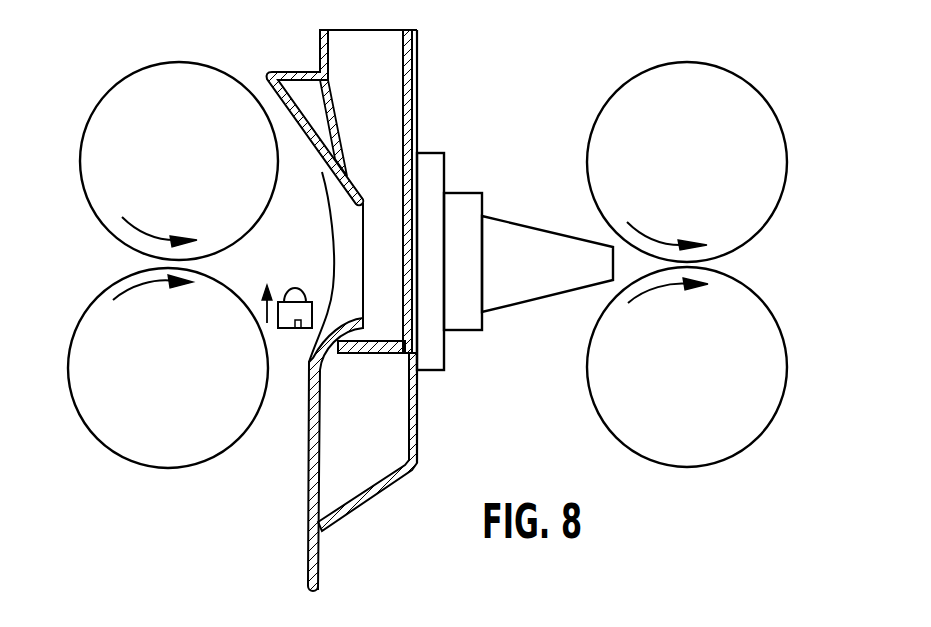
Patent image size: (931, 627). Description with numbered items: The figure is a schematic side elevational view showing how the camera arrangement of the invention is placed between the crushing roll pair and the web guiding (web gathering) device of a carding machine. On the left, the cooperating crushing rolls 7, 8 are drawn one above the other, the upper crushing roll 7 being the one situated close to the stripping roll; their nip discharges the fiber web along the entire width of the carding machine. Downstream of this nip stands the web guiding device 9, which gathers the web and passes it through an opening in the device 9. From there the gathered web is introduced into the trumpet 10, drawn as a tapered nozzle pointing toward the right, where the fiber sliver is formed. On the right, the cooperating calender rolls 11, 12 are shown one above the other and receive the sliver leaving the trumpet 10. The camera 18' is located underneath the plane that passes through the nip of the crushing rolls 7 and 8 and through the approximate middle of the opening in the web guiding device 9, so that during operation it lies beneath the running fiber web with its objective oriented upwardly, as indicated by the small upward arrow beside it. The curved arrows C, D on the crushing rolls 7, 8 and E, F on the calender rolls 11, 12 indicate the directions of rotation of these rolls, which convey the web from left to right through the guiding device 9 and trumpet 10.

The upper crushing roll 7 is at (97, 140).
The crushing roll 8 is at (168, 437).
The web guiding device 9 is at (348, 257).
The trumpet 10 is at (523, 252).
The calender roll 11 is at (767, 135).
The calender roll 12 is at (748, 415).
The camera 18' is at (287, 367).
The rotation direction of roller 7 C is at (152, 237).
The rotation direction of roller 8 D is at (143, 287).
The rotation direction of roller 11 E is at (657, 240).
The rotation direction of roller 12 F is at (648, 295).